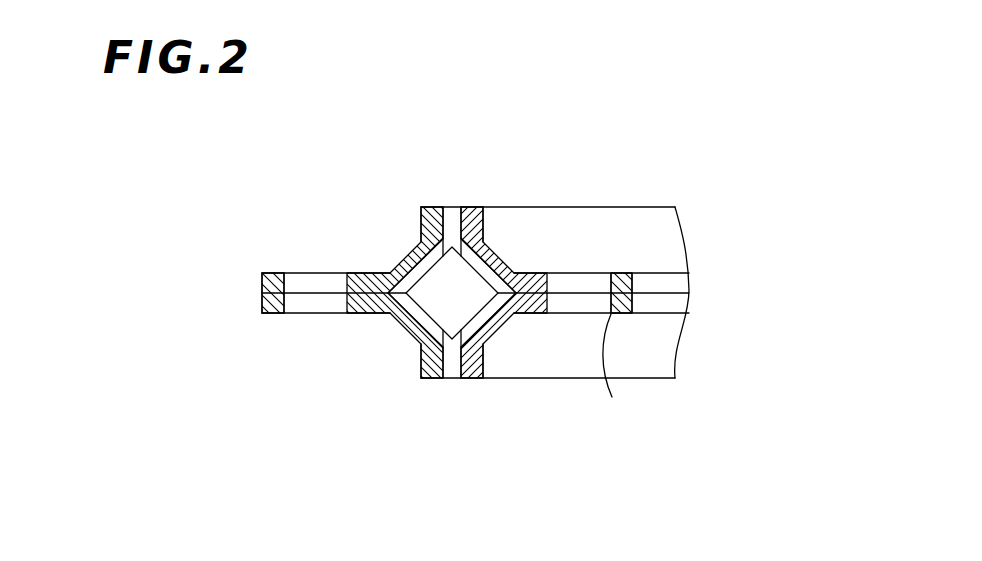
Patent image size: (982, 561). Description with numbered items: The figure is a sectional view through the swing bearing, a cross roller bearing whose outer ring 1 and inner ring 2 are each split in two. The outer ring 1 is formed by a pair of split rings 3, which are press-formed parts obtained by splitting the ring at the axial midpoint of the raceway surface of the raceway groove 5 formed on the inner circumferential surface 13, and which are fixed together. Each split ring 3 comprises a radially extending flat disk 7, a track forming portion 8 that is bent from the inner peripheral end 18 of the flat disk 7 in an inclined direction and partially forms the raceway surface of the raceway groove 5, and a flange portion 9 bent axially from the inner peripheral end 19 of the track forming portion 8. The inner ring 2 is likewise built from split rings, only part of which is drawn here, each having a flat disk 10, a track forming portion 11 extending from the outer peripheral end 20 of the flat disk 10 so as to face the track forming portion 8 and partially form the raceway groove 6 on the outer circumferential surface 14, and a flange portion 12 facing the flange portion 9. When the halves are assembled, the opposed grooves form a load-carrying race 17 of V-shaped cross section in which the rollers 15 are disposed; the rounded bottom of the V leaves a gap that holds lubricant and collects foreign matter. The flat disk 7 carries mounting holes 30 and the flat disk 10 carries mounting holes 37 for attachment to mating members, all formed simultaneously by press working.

The outer ring 1 is at (370, 267).
The inner ring 2 is at (532, 266).
The split rings 3 is at (366, 317).
The raceway groove 5 is at (430, 352).
The raceway groove 6 is at (483, 262).
The flat disk 7 is at (268, 273).
The track forming portion 8 is at (406, 276).
The flange portion 9 is at (431, 236).
The flat disk 10 is at (633, 272).
The track forming portion 11 is at (509, 266).
The flange portion 12 is at (465, 238).
The inner circumferential surface 13 is at (424, 318).
The outer circumferential surface 14 is at (450, 240).
The rollers 15 is at (445, 265).
The load-carrying race 17 is at (427, 286).
The inner peripheral end 18 is at (404, 319).
The inner peripheral end 19 is at (424, 342).
The outer peripheral end 20 is at (507, 268).
The mounting holes 30 is at (297, 316).
The mounting holes 37 is at (618, 372).